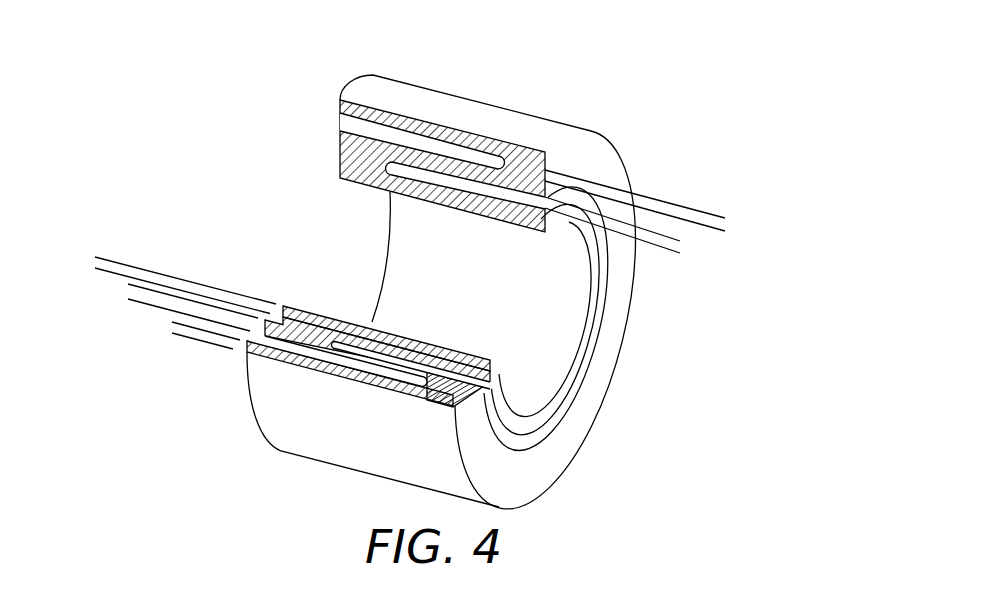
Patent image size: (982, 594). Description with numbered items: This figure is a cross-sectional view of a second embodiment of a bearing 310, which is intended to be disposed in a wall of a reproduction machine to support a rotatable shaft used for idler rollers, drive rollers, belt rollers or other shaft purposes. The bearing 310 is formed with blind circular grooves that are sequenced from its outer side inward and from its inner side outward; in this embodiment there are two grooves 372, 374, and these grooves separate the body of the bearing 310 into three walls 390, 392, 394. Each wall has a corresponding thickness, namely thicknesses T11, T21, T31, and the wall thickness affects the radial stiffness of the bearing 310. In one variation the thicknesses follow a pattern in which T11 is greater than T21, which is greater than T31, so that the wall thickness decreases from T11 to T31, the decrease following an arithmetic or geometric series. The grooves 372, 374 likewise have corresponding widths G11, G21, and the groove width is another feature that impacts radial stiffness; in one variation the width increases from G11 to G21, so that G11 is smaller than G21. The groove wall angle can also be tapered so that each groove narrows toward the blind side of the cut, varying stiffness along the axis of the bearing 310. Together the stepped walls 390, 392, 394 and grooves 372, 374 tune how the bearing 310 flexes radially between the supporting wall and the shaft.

The bearing 310 is at (536, 88).
The groove 372 is at (428, 182).
The groove 374 is at (358, 128).
The wall 390 is at (375, 333).
The wall 392 is at (408, 362).
The wall 394 is at (350, 382).
The groove width G11 is at (665, 222).
The groove width G21 is at (712, 198).
The wall thickness T11 is at (110, 245).
The wall thickness T21 is at (146, 271).
The wall thickness T31 is at (188, 310).